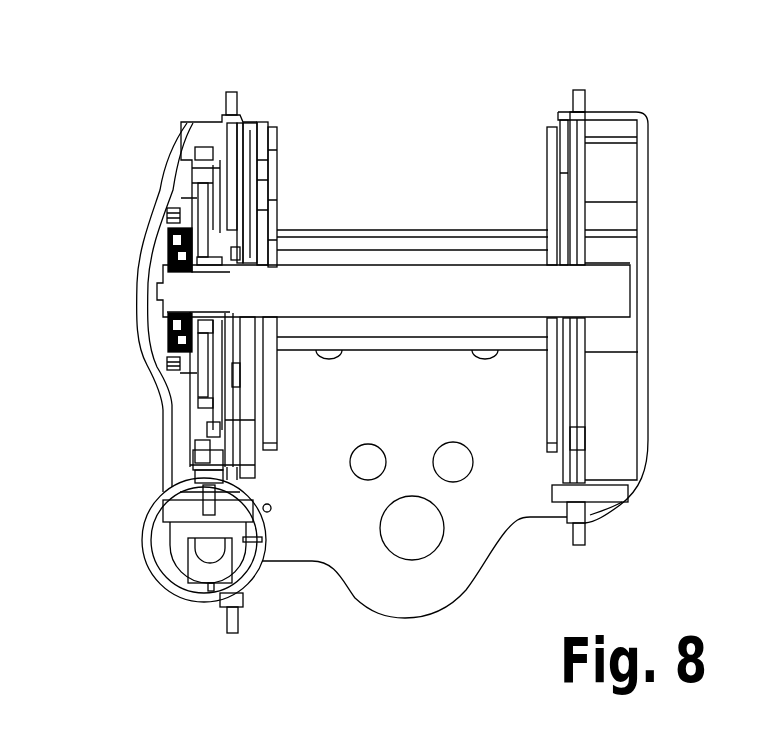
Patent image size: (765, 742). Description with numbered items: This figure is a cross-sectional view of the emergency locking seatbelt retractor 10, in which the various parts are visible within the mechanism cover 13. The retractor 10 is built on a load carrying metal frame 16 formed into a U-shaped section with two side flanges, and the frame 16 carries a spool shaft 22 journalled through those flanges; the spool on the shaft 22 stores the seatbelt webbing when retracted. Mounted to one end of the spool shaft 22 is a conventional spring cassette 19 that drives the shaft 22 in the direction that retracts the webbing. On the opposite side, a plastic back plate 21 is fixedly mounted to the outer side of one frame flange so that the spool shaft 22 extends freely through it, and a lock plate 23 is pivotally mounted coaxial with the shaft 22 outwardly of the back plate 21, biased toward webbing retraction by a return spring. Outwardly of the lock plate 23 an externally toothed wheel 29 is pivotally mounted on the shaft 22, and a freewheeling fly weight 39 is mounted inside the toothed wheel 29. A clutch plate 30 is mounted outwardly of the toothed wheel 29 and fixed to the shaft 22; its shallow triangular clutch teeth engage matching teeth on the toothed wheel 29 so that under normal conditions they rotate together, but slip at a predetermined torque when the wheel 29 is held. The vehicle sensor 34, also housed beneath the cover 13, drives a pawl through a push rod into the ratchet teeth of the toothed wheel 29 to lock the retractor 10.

The emergency locking seatbelt retractor 10 is at (74, 69).
The mechanism cover 13 is at (137, 270).
The frame 16 is at (503, 450).
The spring cassette 19 is at (630, 223).
The back plate 21 is at (230, 150).
The spool shaft 22 is at (443, 292).
The lock plate 23 is at (225, 177).
The toothed wheel 29 is at (188, 428).
The clutch plate 30 is at (168, 358).
The vehicle sensor 34 is at (210, 574).
The fly weight 39 is at (192, 422).